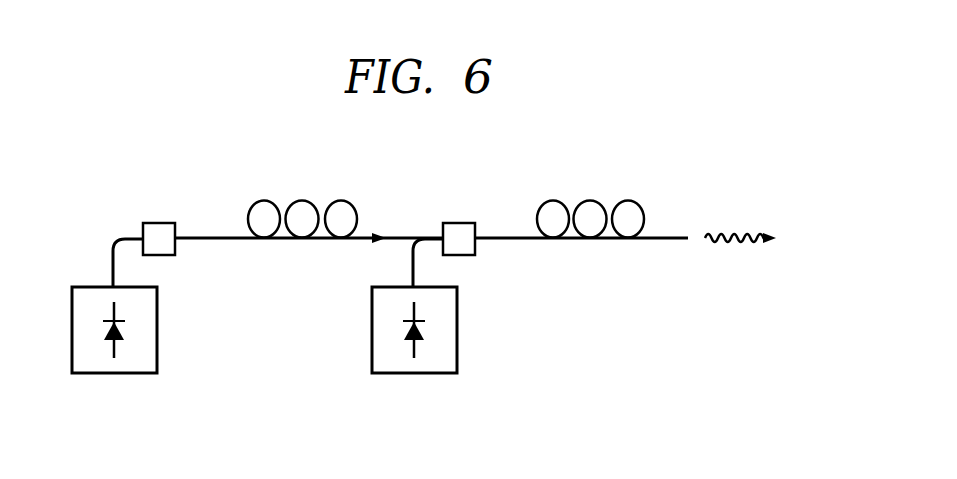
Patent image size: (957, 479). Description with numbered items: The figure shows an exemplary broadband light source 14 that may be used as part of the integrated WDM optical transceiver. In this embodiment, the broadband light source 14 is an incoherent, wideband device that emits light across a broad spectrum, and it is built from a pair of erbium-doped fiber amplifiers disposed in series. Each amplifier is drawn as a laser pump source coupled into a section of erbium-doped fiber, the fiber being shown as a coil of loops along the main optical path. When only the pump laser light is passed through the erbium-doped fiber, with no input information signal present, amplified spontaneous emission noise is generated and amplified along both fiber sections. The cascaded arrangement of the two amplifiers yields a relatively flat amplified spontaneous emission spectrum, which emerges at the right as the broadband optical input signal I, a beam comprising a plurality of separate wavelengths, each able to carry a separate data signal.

The broadband light source (BLS) 14 is at (151, 158).
The broadband optical input signal I is at (752, 236).